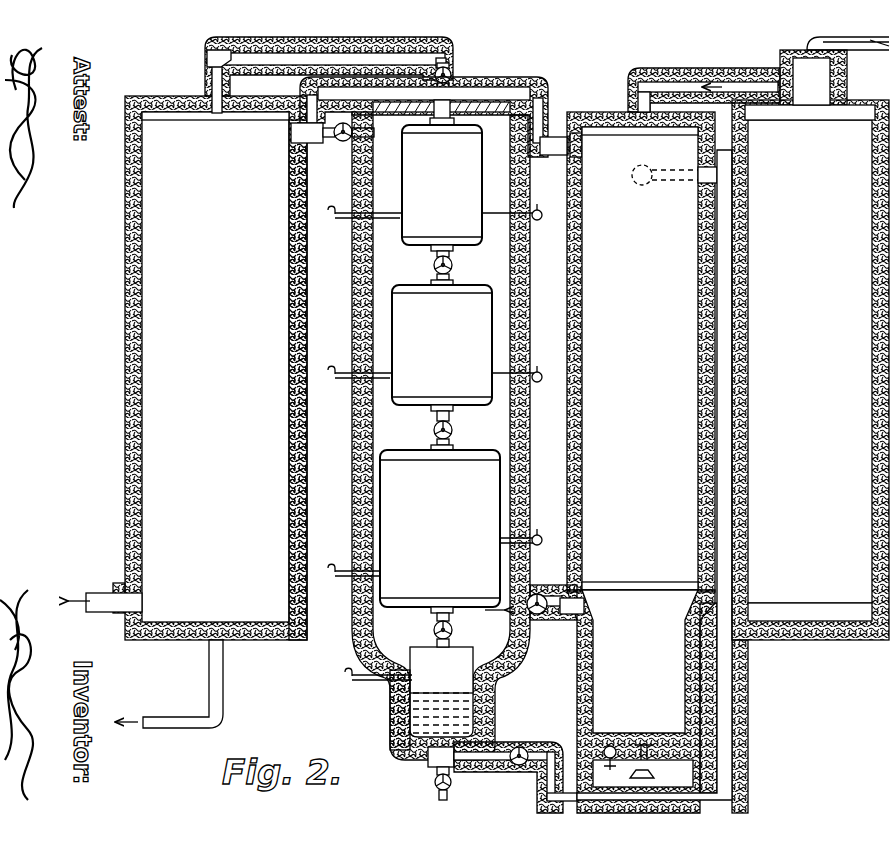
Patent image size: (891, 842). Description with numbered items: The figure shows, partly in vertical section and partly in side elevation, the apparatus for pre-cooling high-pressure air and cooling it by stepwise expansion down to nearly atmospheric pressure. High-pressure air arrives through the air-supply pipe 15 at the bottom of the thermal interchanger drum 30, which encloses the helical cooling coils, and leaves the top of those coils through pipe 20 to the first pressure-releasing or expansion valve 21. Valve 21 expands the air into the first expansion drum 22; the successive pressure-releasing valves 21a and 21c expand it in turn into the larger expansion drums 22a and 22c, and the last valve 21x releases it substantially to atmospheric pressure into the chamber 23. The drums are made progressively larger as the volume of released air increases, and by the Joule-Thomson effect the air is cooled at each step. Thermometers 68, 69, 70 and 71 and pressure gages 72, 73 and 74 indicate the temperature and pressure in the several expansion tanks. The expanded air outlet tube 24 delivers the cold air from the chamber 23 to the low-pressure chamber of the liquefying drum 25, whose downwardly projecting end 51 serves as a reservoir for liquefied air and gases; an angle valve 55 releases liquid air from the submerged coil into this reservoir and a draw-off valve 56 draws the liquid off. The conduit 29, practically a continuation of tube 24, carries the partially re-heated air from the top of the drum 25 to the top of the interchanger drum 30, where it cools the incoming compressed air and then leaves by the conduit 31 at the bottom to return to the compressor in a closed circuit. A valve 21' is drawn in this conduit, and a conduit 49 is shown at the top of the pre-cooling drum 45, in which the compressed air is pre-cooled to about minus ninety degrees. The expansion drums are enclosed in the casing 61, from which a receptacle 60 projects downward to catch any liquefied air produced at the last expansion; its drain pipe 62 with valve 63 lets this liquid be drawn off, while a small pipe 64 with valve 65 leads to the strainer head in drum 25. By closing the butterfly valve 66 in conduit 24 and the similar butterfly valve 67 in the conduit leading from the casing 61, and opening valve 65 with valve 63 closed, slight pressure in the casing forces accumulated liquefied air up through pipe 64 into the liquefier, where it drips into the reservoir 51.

The high-pressure air-supply pipe 15 is at (180, 720).
The pipe 20 is at (213, 52).
The first pressure-releasing or expansion valve 21 is at (491, 65).
The valve 21' is at (368, 139).
The pressure-releasing valve 21a is at (455, 266).
The pressure-releasing valve 21c is at (455, 432).
The pressure-releasing valve 21x is at (455, 631).
The first expansion drum 22 is at (443, 162).
The expansion drum 22a is at (440, 337).
The expansion drum 22c is at (440, 517).
The chamber 23 is at (405, 632).
The expanded air outlet tube 24 is at (562, 610).
The liquefying drum 25 is at (625, 282).
The conduit 29 is at (483, 95).
The thermal interchanger drum 30 is at (190, 237).
The conduit 31 is at (107, 597).
The N2O pre-cooling drum 45 is at (792, 535).
The conduit 49 is at (678, 86).
The downwardly projecting end 51 is at (658, 658).
The angle valve 55 is at (648, 773).
The draw-off valve 56 is at (606, 760).
The receptacle 60 is at (390, 705).
The casing 61 is at (352, 410).
The drain pipe 62 is at (426, 760).
The valve 63 is at (451, 783).
The pipe 64 is at (712, 351).
The valve 65 is at (519, 746).
The butterfly valve 66 is at (541, 592).
The butterfly valve 67 is at (290, 178).
The thermometer 68 is at (342, 222).
The thermometer 69 is at (343, 372).
The thermometer 70 is at (343, 582).
The thermometer 71 is at (345, 678).
The pressure gage 72 is at (538, 225).
The pressure gage 73 is at (540, 387).
The pressure gage 74 is at (541, 536).